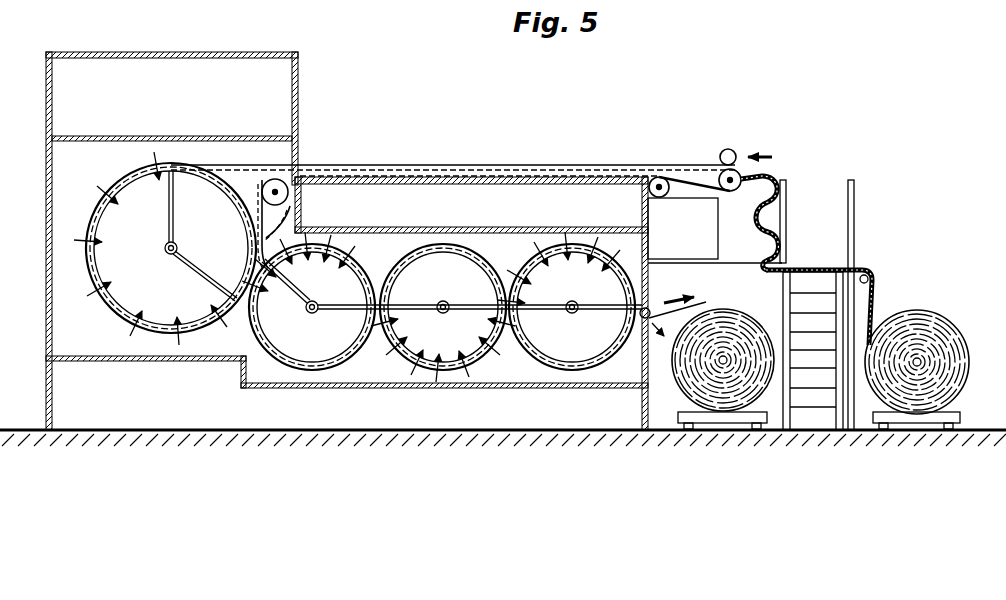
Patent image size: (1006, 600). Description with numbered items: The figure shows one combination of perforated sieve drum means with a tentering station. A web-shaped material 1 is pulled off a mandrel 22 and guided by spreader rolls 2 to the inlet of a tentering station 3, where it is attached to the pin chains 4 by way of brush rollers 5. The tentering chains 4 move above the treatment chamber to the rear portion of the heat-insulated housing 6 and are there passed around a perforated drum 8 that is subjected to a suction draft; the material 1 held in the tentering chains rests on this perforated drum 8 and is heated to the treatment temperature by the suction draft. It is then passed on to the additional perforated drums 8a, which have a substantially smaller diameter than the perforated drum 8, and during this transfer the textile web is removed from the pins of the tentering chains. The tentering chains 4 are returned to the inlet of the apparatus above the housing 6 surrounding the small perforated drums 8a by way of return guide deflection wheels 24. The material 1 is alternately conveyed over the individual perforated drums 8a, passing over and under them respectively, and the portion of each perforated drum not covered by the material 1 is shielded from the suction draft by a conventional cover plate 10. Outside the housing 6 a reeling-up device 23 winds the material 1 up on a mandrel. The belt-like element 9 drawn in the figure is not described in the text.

The web-shaped material 1 is at (876, 287).
The spreader rolls 2 is at (776, 204).
The tentering station 3 is at (768, 172).
The pin chains (tentering chains) 4 is at (669, 178).
The brush rollers 5 is at (726, 150).
The heat-insulated housing 6 is at (174, 52).
The perforated drum 8 is at (236, 192).
The additional perforated drums 8a is at (478, 248).
The conveyor belt 9 is at (249, 137).
The cover plate 10 is at (203, 185).
The mandrel 22 is at (930, 312).
The reeling-up device 23 is at (724, 392).
The return guide deflection wheels 24 is at (284, 196).